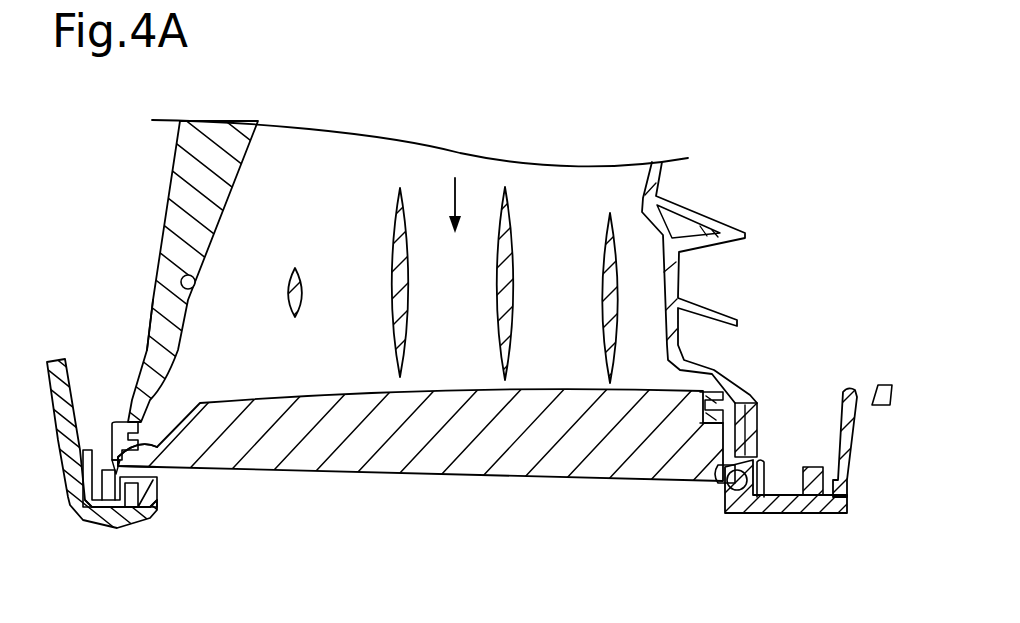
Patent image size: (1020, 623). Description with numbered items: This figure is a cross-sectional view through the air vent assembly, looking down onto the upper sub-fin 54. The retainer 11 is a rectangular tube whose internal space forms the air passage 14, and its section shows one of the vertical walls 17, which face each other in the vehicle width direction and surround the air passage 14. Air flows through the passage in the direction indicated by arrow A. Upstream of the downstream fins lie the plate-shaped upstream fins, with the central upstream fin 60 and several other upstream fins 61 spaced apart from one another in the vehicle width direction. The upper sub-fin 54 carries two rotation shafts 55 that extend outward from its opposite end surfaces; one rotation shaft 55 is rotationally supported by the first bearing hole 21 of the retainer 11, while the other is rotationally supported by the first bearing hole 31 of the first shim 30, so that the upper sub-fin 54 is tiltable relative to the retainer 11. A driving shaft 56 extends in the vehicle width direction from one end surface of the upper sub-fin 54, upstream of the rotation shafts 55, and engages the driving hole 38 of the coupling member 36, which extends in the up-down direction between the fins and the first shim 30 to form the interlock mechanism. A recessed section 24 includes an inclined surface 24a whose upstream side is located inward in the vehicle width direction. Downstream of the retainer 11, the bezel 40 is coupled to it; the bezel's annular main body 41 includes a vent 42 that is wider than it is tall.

The retainer 11 is at (150, 236).
The vertical wall 17 is at (148, 300).
The air passage 14 is at (335, 185).
The upper sub-fin 54 is at (462, 481).
The first bearing hole 21 is at (160, 464).
The upstream fin 60 is at (400, 188).
The upstream fin 61 is at (295, 268).
The flow direction A is at (455, 178).
The rotation shaft 55 is at (113, 442).
The bezel 40 is at (82, 528).
The main body 41 is at (100, 528).
The vent 42 is at (150, 521).
The recessed section 24 is at (120, 478).
The inclined surface 24a is at (142, 498).
The coupling member 36 is at (715, 372).
The driving hole 38 is at (700, 400).
The driving shaft 56 is at (745, 400).
The first shim 30 is at (758, 430).
The first bearing hole 31 is at (717, 488).